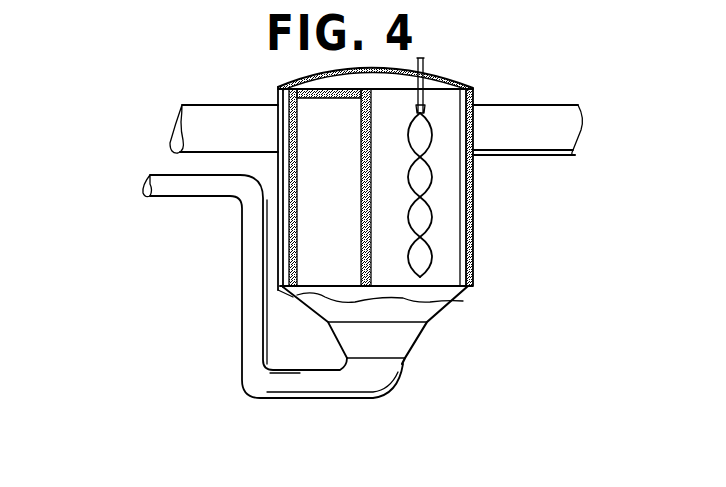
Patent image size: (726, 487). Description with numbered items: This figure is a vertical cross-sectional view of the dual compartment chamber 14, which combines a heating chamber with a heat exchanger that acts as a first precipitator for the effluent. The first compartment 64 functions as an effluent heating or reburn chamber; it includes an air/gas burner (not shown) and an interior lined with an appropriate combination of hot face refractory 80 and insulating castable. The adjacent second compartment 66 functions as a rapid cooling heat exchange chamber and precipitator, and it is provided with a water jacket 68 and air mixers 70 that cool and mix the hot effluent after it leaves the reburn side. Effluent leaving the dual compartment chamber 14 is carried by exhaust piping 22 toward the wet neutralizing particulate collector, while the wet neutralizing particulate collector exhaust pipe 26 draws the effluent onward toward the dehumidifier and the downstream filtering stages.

The dual compartment chamber 14 is at (473, 82).
The exhaust piping 22 is at (235, 146).
The wet neutralizing particulate collector exhaust pipe 26 is at (534, 146).
The first compartment 64 is at (336, 229).
The second compartment 66 is at (448, 258).
The water jacket 68 is at (462, 222).
The air mixers 70 is at (427, 177).
The hot face refractory 80 is at (300, 137).